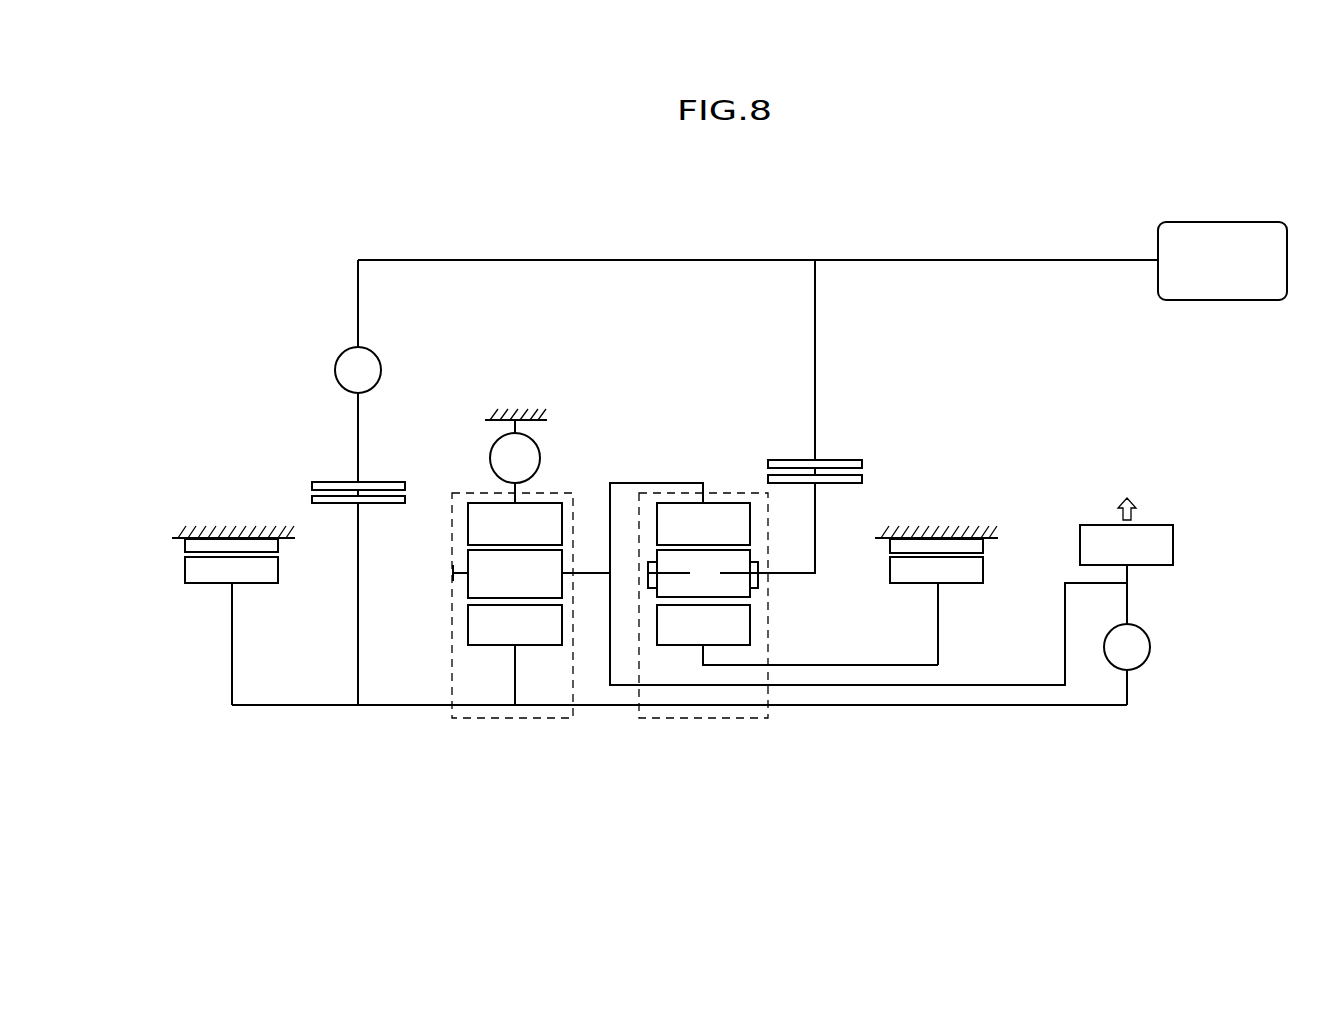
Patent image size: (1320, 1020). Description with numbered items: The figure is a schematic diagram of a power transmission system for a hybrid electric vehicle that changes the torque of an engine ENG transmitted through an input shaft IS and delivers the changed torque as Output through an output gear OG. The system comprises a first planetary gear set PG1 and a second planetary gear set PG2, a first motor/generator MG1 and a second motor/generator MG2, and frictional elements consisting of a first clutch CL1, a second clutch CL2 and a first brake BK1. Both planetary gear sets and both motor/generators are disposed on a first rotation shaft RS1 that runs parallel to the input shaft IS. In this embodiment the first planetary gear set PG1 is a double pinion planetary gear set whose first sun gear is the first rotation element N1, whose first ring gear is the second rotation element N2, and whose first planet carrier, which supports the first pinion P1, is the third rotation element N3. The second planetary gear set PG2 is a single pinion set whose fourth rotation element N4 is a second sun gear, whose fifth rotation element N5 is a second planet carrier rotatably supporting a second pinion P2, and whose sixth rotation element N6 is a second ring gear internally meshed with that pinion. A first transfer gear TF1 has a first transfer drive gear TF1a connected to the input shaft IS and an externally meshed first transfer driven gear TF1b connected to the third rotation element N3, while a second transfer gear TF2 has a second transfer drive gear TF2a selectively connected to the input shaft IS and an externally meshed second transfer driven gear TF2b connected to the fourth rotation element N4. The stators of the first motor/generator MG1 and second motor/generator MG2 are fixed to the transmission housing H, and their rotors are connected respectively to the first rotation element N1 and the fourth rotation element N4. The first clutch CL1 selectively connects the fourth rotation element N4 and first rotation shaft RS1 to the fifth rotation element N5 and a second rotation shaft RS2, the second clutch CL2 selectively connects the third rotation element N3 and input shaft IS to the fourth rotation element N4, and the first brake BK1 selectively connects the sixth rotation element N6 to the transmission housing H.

The input shaft IS is at (898, 260).
The engine ENG is at (1222, 261).
The second clutch CL2 is at (358, 482).
The second transfer gear TF2 is at (303, 451).
The second transfer drive gear TF2a is at (328, 482).
The second transfer driven gear TF2b is at (312, 500).
The transmission housing H is at (197, 533).
The second motor/generator MG2 is at (193, 598).
The first brake BK1 is at (516, 456).
The second planetary gear set PG2 is at (531, 644).
The sixth rotation element N6 is at (515, 524).
The second pinion P2 is at (531, 574).
The fourth rotation element N4 is at (515, 655).
The fifth rotation element N5 is at (588, 570).
The first planetary gear set PG1 is at (788, 644).
The second rotation element N2 is at (703, 524).
The first pinion P1 is at (703, 573).
The first rotation element N1 is at (797, 635).
The third rotation element N3 is at (790, 575).
The first transfer gear TF1 is at (870, 433).
The first transfer drive gear TF1a is at (847, 460).
The first transfer driven gear TF1b is at (862, 480).
The first motor/generator MG1 is at (993, 582).
The output Output is at (1127, 494).
The output gear OG is at (1126, 545).
The first clutch CL1 is at (1127, 635).
The first rotation shaft RS1 is at (865, 707).
The second rotation shaft RS2 is at (1000, 685).